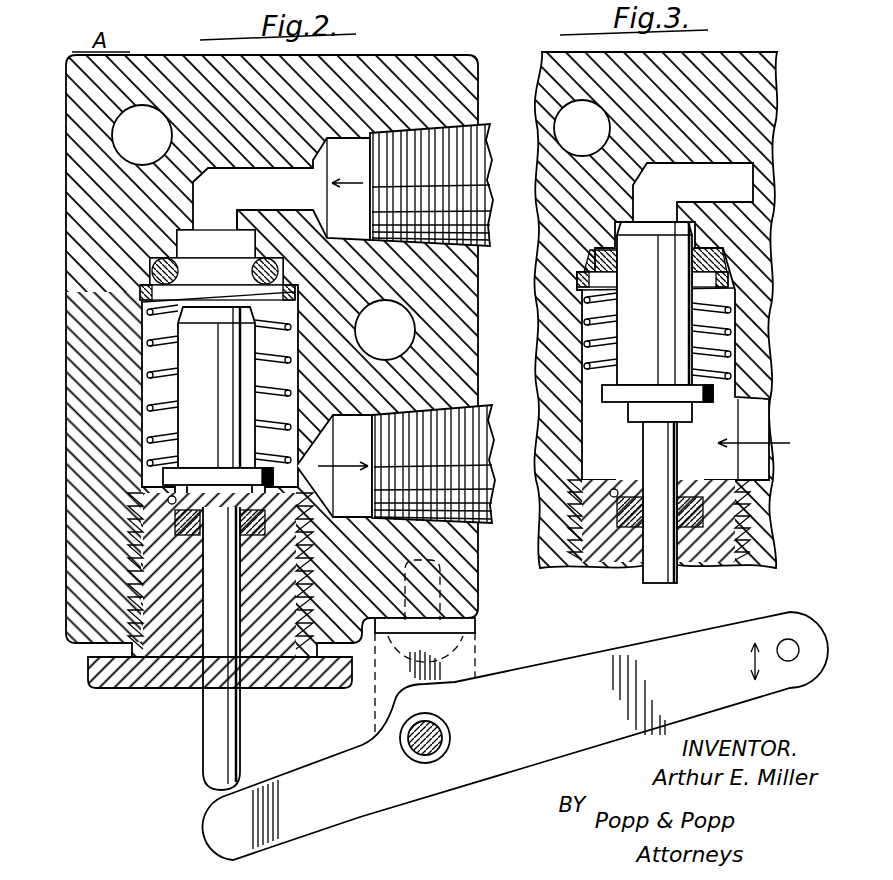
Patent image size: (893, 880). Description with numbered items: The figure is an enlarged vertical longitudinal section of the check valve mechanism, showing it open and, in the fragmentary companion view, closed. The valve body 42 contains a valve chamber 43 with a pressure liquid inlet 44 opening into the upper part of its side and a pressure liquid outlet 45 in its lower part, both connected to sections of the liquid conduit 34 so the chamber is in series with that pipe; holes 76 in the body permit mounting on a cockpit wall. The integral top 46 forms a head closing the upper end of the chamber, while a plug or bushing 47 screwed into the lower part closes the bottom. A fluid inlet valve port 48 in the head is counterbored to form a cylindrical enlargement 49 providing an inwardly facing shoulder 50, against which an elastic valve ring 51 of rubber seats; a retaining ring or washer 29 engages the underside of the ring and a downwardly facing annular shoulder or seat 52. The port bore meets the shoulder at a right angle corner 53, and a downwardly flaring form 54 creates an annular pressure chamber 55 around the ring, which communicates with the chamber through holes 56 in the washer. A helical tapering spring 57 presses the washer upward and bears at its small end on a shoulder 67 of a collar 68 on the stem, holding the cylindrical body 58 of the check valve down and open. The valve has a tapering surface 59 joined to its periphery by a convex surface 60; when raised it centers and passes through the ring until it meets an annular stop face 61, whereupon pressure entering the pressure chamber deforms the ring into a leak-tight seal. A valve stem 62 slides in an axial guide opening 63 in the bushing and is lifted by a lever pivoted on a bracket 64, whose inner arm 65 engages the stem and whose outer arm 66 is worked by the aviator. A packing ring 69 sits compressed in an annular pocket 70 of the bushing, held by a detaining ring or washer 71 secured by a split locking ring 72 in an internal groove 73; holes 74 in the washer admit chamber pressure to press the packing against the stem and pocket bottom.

In FIG. 2, the retaining ring or washer 29 is at (219, 314).
In FIG. 3, the retaining ring or washer 29 is at (775, 285).
In FIG. 2, the liquid conduit 34 is at (485, 132).
In FIG. 3, the liquid conduit 34 is at (537, 434).
In FIG. 2, the valve body 42 is at (410, 58).
In FIG. 3, the valve body 42 is at (768, 60).
In FIG. 2, the valve chamber 43 is at (257, 336).
In FIG. 3, the valve chamber 43 is at (673, 346).
In FIG. 2, the pressure liquid inlet 44 is at (235, 200).
In FIG. 3, the pressure liquid inlet 44 is at (690, 177).
In FIG. 2, the pressure liquid outlet 45 is at (343, 466).
In FIG. 3, the pressure liquid outlet 45 is at (752, 418).
In FIG. 2, the integral top 46 is at (175, 200).
In FIG. 2, the plug or bushing 47 is at (140, 690).
In FIG. 3, the plug or bushing 47 is at (728, 562).
In FIG. 2, the fluid inlet valve port 48 is at (216, 244).
In FIG. 3, the fluid inlet valve port 48 is at (692, 217).
In FIG. 2, the cylindrical enlargement 49 is at (150, 259).
In FIG. 3, the cylindrical enlargement 49 is at (712, 252).
In FIG. 2, the inwardly facing shoulder 50 is at (266, 258).
In FIG. 3, the inwardly facing shoulder 50 is at (709, 260).
In FIG. 2, the elastic valve ring 51 is at (216, 271).
In FIG. 3, the elastic valve ring 51 is at (727, 259).
In FIG. 2, the downwardly facing annular shoulder or seat 52 is at (140, 285).
In FIG. 3, the downwardly facing annular shoulder or seat 52 is at (732, 278).
In FIG. 2, the right angle corner 53 is at (167, 250).
In FIG. 3, the right angle corner 53 is at (700, 238).
In FIG. 2, the downwardly flaring form 54 is at (346, 188).
In FIG. 3, the downwardly flaring form 54 is at (587, 256).
In FIG. 2, the annular pressure chamber 55 is at (300, 288).
In FIG. 3, the annular pressure chamber 55 is at (580, 278).
In FIG. 2, the holes 56 is at (140, 297).
In FIG. 3, the holes 56 is at (582, 288).
In FIG. 2, the spring 57 is at (290, 357).
In FIG. 3, the spring 57 is at (705, 330).
In FIG. 2, the cylindrical body of the check valve 58 is at (216, 387).
In FIG. 3, the cylindrical body of the check valve 58 is at (654, 303).
In FIG. 2, the tapering surface 59 is at (230, 312).
In FIG. 3, the tapering surface 59 is at (637, 240).
In FIG. 2, the convex surface 60 is at (183, 333).
In FIG. 3, the convex surface 60 is at (685, 240).
In FIG. 2, the annular stop face 61 is at (190, 228).
In FIG. 3, the annular stop face 61 is at (710, 188).
In FIG. 2, the valve stem 62 is at (205, 750).
In FIG. 3, the valve stem 62 is at (660, 583).
In FIG. 2, the axial guide opening 63 is at (248, 690).
In FIG. 2, the bracket 64 is at (470, 652).
In FIG. 2, the inner arm 65 is at (288, 814).
In FIG. 2, the outer arm 66 is at (515, 736).
In FIG. 2, the shoulder 67 is at (265, 468).
In FIG. 3, the shoulder 67 is at (705, 402).
In FIG. 2, the collar 68 is at (200, 476).
In FIG. 3, the collar 68 is at (652, 406).
In FIG. 2, the packing ring 69 is at (198, 540).
In FIG. 3, the packing ring 69 is at (605, 522).
In FIG. 2, the annular pocket 70 is at (195, 575).
In FIG. 3, the annular pocket 70 is at (618, 566).
In FIG. 2, the detaining ring or washer 71 is at (198, 548).
In FIG. 3, the detaining ring or washer 71 is at (636, 497).
In FIG. 2, the split locking ring 72 is at (192, 498).
In FIG. 3, the split locking ring 72 is at (690, 497).
In FIG. 2, the internal groove 73 is at (140, 492).
In FIG. 3, the internal groove 73 is at (760, 478).
In FIG. 2, the holes 74 is at (168, 503).
In FIG. 3, the holes 74 is at (610, 494).
In FIG. 2, the holes 76 is at (263, 232).
In FIG. 3, the holes 76 is at (582, 128).